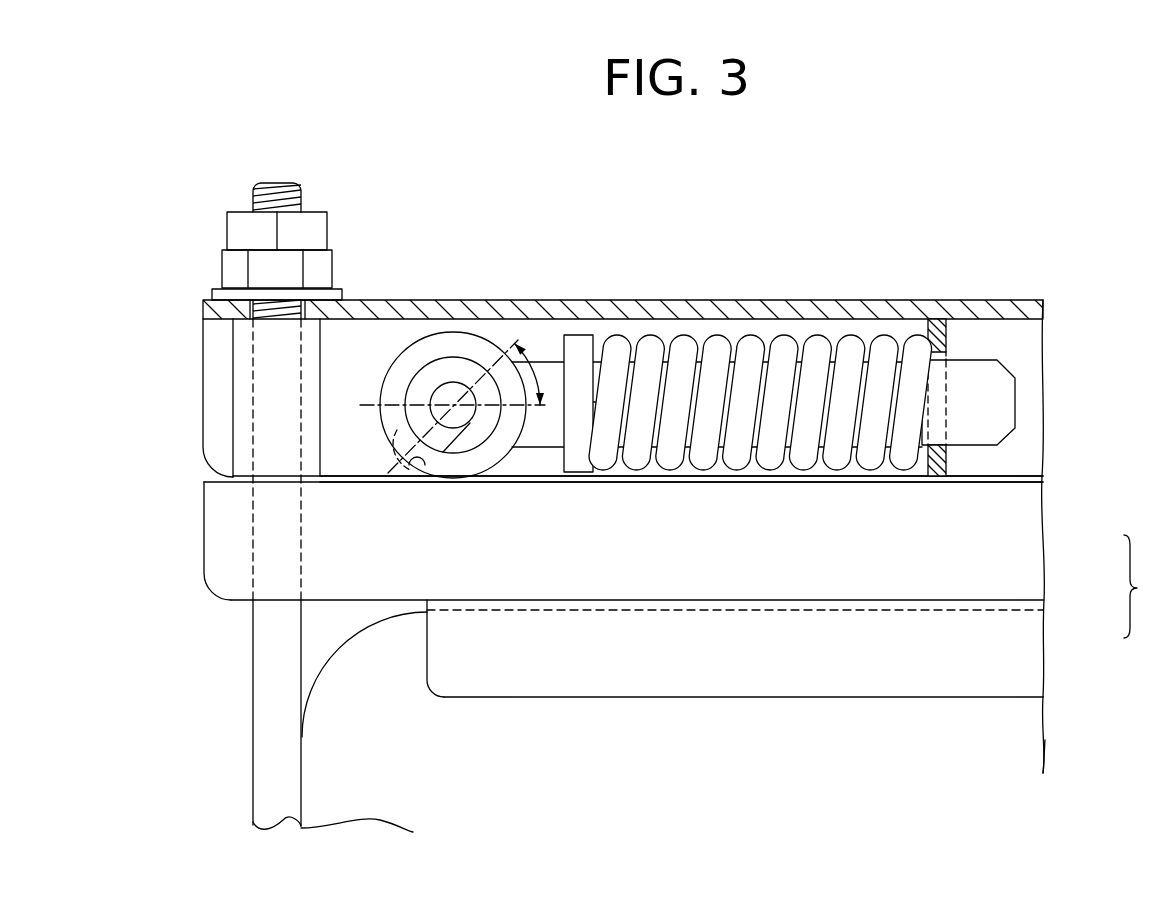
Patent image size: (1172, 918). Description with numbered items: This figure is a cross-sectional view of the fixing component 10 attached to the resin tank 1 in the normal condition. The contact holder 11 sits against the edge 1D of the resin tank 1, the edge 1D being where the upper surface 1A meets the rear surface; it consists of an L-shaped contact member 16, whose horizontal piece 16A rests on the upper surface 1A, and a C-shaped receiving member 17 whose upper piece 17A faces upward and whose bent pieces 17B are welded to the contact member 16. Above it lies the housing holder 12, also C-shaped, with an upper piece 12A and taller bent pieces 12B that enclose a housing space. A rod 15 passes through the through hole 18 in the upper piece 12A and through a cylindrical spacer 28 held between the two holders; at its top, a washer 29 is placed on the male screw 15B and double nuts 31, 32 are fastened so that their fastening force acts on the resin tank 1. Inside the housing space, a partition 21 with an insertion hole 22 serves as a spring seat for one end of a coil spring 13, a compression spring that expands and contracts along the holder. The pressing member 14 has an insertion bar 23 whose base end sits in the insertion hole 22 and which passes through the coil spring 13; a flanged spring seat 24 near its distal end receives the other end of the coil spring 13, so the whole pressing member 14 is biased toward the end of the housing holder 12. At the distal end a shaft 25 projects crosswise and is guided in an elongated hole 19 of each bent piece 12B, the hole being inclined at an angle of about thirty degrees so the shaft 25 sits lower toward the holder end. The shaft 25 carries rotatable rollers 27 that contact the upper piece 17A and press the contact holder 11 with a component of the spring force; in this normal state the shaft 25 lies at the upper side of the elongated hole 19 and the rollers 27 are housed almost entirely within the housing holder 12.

The resin tank 1 is at (1025, 722).
The upper surface 1A is at (1020, 757).
The edge 1D is at (815, 608).
The fixing component 10 is at (730, 240).
The contact holder 11 is at (1147, 586).
The housing holder 12 is at (994, 299).
The upper piece 12A is at (510, 300).
The bent piece 12B is at (212, 388).
The coil spring 13 is at (815, 345).
The pressing member 14 is at (780, 405).
The rod 15 is at (270, 745).
The male screw 15B is at (273, 190).
The contact member 16 is at (1015, 648).
The horizontal piece 16A is at (750, 668).
The receiving member 17 is at (1015, 540).
The upper piece 17A is at (358, 478).
The bent piece 17B is at (222, 545).
The through hole 18 is at (262, 320).
The elongated hole 19 is at (397, 430).
The partition 21 is at (946, 462).
The insertion hole 22 is at (946, 356).
The insertion bar 23 is at (1000, 400).
The spring seat 24 is at (575, 472).
The shaft 25 is at (458, 412).
The roller 27 is at (455, 468).
The spacer 28 is at (243, 405).
The washer 29 is at (212, 295).
The nut 31 is at (233, 265).
The nut 32 is at (233, 228).